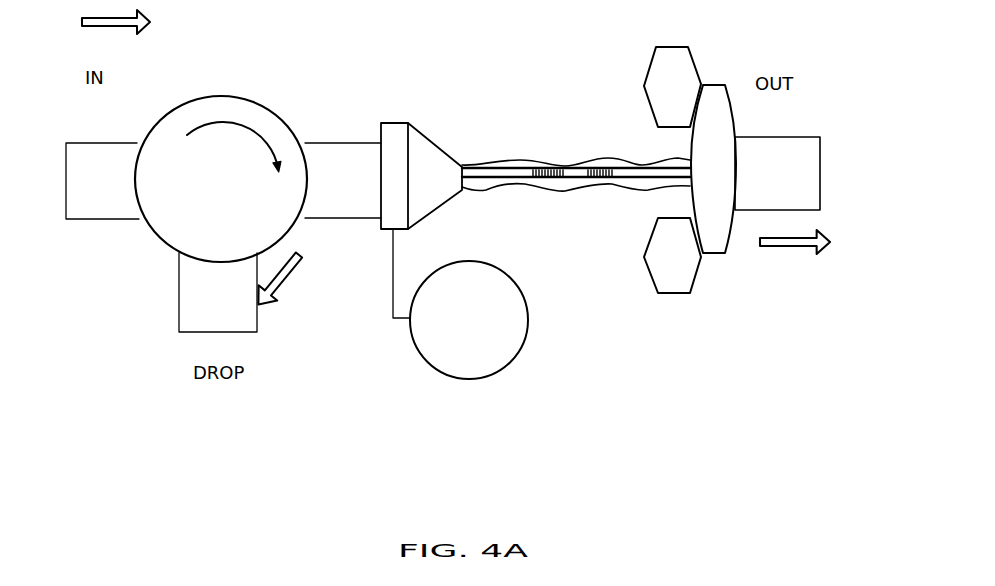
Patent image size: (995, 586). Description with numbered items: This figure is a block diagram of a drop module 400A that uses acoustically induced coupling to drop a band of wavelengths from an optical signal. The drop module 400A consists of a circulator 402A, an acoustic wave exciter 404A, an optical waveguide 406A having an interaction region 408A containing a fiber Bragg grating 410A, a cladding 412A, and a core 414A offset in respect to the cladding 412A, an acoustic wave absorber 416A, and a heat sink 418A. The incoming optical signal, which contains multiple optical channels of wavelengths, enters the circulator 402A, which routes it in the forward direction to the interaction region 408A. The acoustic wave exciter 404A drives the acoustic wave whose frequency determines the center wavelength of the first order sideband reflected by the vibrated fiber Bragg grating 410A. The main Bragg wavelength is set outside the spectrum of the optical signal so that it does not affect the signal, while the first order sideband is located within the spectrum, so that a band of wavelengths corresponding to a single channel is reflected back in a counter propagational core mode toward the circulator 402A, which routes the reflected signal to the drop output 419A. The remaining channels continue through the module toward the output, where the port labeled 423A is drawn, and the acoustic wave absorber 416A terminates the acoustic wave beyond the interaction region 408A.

The drop module 400A is at (473, 470).
The circulator 402A is at (242, 232).
The acoustic wave exciter 404A is at (538, 325).
The optical waveguide 406A is at (112, 123).
The interaction region 408A is at (552, 150).
The fiber Bragg grating 410A is at (546, 179).
The cladding 412A is at (478, 186).
The core 414A is at (636, 179).
The acoustic wave absorber 416A is at (722, 127).
The heat sink 418A is at (663, 77).
The drop output 419A is at (243, 328).
The output waveguide 423A is at (792, 178).